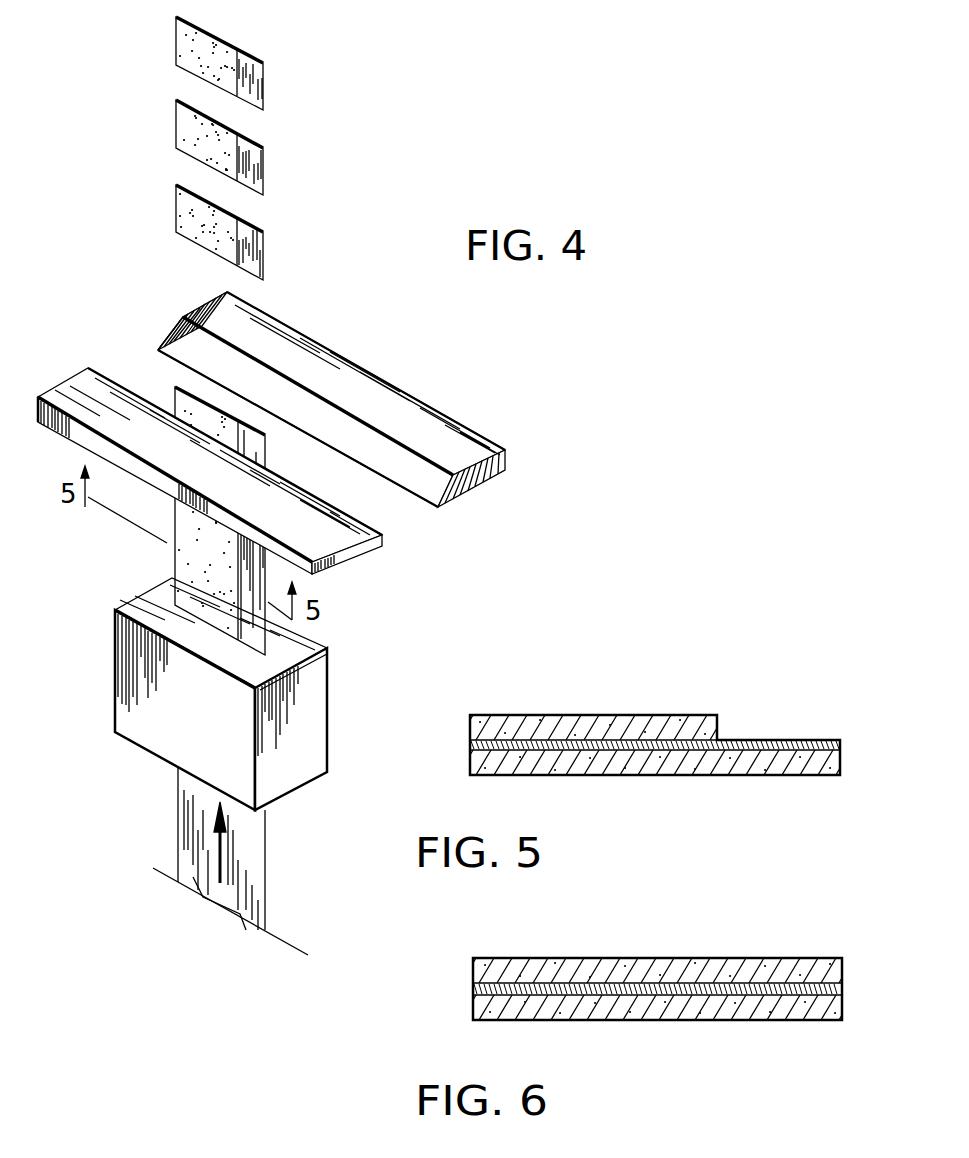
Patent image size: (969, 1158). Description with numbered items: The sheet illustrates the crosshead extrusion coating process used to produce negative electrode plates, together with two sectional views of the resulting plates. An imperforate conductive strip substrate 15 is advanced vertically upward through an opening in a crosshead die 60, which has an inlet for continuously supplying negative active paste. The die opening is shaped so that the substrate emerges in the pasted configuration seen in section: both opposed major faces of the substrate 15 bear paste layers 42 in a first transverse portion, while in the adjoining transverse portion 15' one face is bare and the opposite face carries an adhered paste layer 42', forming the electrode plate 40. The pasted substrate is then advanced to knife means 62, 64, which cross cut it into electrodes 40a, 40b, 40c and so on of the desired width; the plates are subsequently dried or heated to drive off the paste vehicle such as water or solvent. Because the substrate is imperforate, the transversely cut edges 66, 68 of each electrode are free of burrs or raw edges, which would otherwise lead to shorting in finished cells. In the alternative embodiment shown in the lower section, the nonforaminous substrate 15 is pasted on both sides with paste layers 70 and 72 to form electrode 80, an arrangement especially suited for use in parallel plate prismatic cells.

In FIG. 4, the imperforate conductive strip substrate 15 is at (248, 861).
In FIG. 5, the imperforate conductive strip substrate 15 is at (629, 739).
In FIG. 6, the imperforate conductive strip substrate 15 is at (624, 986).
In FIG. 4, the transverse portion of the substrate 15' is at (311, 352).
In FIG. 5, the electrode plate 40 is at (660, 704).
In FIG. 4, the electrode 40a is at (273, 258).
In FIG. 4, the electrode 40b is at (273, 175).
In FIG. 4, the electrode 40c is at (238, 46).
In FIG. 4, the paste layers 42 is at (191, 352).
In FIG. 5, the paste layers 42 is at (655, 742).
In FIG. 5, the paste layer 42' is at (784, 784).
In FIG. 4, the crosshead die 60 is at (303, 720).
In FIG. 4, the knife means 62 is at (358, 547).
In FIG. 4, the knife means 64 is at (493, 470).
In FIG. 4, the transversely cut edge 66 is at (196, 246).
In FIG. 4, the transversely cut edge 68 is at (228, 210).
In FIG. 6, the paste layer 70 is at (562, 958).
In FIG. 6, the paste layer 72 is at (626, 1010).
In FIG. 6, the electrode 80 is at (735, 947).